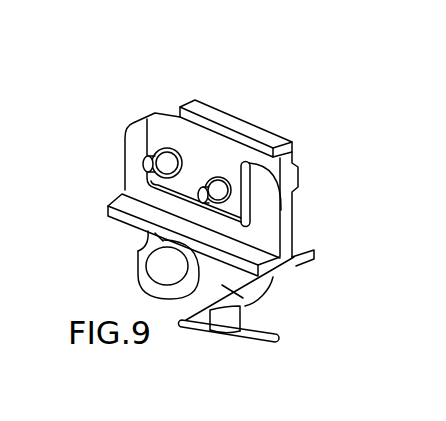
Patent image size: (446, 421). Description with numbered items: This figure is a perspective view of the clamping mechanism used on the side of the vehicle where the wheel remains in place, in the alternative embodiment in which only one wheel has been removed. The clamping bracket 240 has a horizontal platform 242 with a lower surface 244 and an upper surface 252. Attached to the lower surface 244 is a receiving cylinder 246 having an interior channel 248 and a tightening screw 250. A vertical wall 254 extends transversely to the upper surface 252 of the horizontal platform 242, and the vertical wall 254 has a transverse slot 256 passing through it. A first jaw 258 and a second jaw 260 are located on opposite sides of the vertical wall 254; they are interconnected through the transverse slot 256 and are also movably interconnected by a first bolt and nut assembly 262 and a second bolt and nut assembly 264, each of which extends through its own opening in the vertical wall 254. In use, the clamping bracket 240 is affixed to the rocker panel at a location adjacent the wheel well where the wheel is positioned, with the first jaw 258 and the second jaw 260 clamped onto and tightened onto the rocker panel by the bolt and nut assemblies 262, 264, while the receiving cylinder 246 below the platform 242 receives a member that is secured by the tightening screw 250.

The clamping bracket 240 is at (304, 192).
The horizontal platform 242 is at (314, 255).
The lower surface 244 is at (280, 270).
The receiving cylinder 246 is at (243, 305).
The interior channel 248 is at (163, 274).
The tightening screw 250 is at (242, 338).
The upper surface 252 is at (291, 242).
The vertical wall 254 is at (283, 180).
The transverse slot 256 is at (147, 171).
The first jaw 258 is at (160, 123).
The second jaw 260 is at (214, 111).
The first bolt and nut assembly 262 is at (147, 166).
The second bolt and nut assembly 264 is at (212, 176).